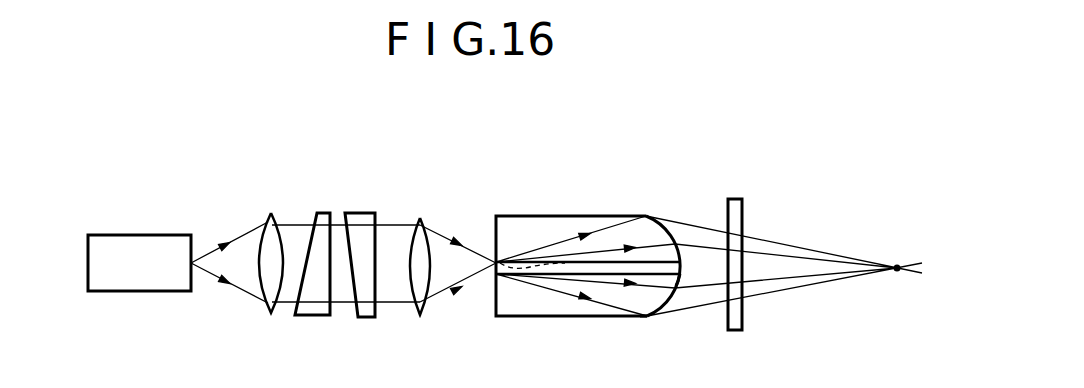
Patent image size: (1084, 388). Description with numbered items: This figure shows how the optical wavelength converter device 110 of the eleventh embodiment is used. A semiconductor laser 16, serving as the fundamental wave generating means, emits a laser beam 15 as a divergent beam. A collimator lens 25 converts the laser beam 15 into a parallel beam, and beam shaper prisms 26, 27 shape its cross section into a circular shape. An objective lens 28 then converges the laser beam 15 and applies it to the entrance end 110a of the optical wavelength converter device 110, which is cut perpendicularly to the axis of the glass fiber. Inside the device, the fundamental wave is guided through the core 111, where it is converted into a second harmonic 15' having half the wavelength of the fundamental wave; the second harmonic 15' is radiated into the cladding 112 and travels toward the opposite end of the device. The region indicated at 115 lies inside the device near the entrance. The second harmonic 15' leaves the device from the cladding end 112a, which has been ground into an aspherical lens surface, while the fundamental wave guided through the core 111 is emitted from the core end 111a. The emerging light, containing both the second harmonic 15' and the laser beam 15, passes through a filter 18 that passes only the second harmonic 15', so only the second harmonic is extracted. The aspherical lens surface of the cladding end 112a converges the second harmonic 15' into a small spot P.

The semiconductor laser 16 is at (133, 248).
The laser beam 15 is at (343, 241).
The collimator lens 25 is at (272, 215).
The beam shaper prism 26 is at (327, 213).
The beam shaper prism 27 is at (366, 212).
The objective lens 28 is at (425, 218).
The optical wavelength converter device 110 is at (592, 259).
The cladding 112 is at (527, 230).
The second harmonic 15' is at (585, 243).
The core 111 is at (657, 265).
The filter 18 is at (743, 213).
The entrance end 110a is at (496, 263).
The reflecting portion 115 is at (542, 280).
The cladding end 112a is at (650, 317).
The core end 111a is at (684, 270).
The small spot P is at (897, 262).